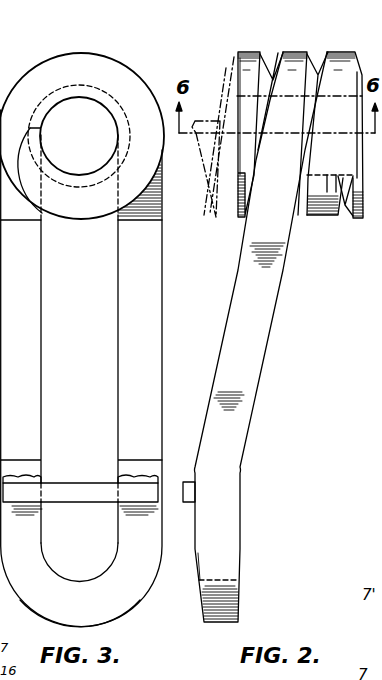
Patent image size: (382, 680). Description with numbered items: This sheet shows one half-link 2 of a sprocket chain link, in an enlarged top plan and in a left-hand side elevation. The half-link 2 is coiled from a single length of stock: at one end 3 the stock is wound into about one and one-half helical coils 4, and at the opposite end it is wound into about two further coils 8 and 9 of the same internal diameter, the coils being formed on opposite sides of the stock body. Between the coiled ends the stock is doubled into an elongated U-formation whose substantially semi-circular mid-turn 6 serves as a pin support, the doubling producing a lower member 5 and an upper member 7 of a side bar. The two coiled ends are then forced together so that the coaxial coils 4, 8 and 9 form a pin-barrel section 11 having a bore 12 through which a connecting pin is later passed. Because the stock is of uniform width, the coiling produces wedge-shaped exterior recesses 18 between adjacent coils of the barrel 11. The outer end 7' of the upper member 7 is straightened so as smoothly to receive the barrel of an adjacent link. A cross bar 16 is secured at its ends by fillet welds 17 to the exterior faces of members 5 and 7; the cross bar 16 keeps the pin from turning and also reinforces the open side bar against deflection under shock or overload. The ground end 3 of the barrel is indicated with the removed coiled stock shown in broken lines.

In FIG. 3, the half-link 2 is at (81, 368).
In FIG. 2, the half-link 2 is at (261, 337).
In FIG. 3, the end of the stock-length 3 is at (30, 128).
In FIG. 2, the end of the stock-length 3 is at (239, 193).
In FIG. 3, the coils 4 is at (72, 58).
In FIG. 2, the coils 4 is at (245, 52).
In FIG. 3, the lower member of the side bar 5 is at (21, 339).
In FIG. 3, the U-bend portion 6 is at (110, 595).
In FIG. 2, the U-bend portion 6 is at (232, 600).
In FIG. 3, the upper member of the side bar 7 is at (140, 339).
In FIG. 2, the upper member of the side bar 7 is at (241, 342).
In FIG. 3, the outer end of member 7 7' is at (110, 574).
In FIG. 2, the outer end of member 7 7' is at (237, 567).
In FIG. 2, the coil 8 is at (296, 60).
In FIG. 2, the coil 9 is at (343, 52).
In FIG. 3, the pin-barrel section 11 is at (110, 80).
In FIG. 2, the pin-barrel section 11 is at (335, 85).
In FIG. 3, the bore 12 is at (79, 136).
In FIG. 2, the bore 12 is at (320, 215).
In FIG. 3, the cross bar 16 is at (70, 490).
In FIG. 2, the cross bar 16 is at (190, 503).
In FIG. 3, the fillet weld 17 is at (22, 476).
In FIG. 2, the fillet weld 17 is at (193, 480).
In FIG. 2, the wedge-shaped exterior recess 18 is at (274, 60).